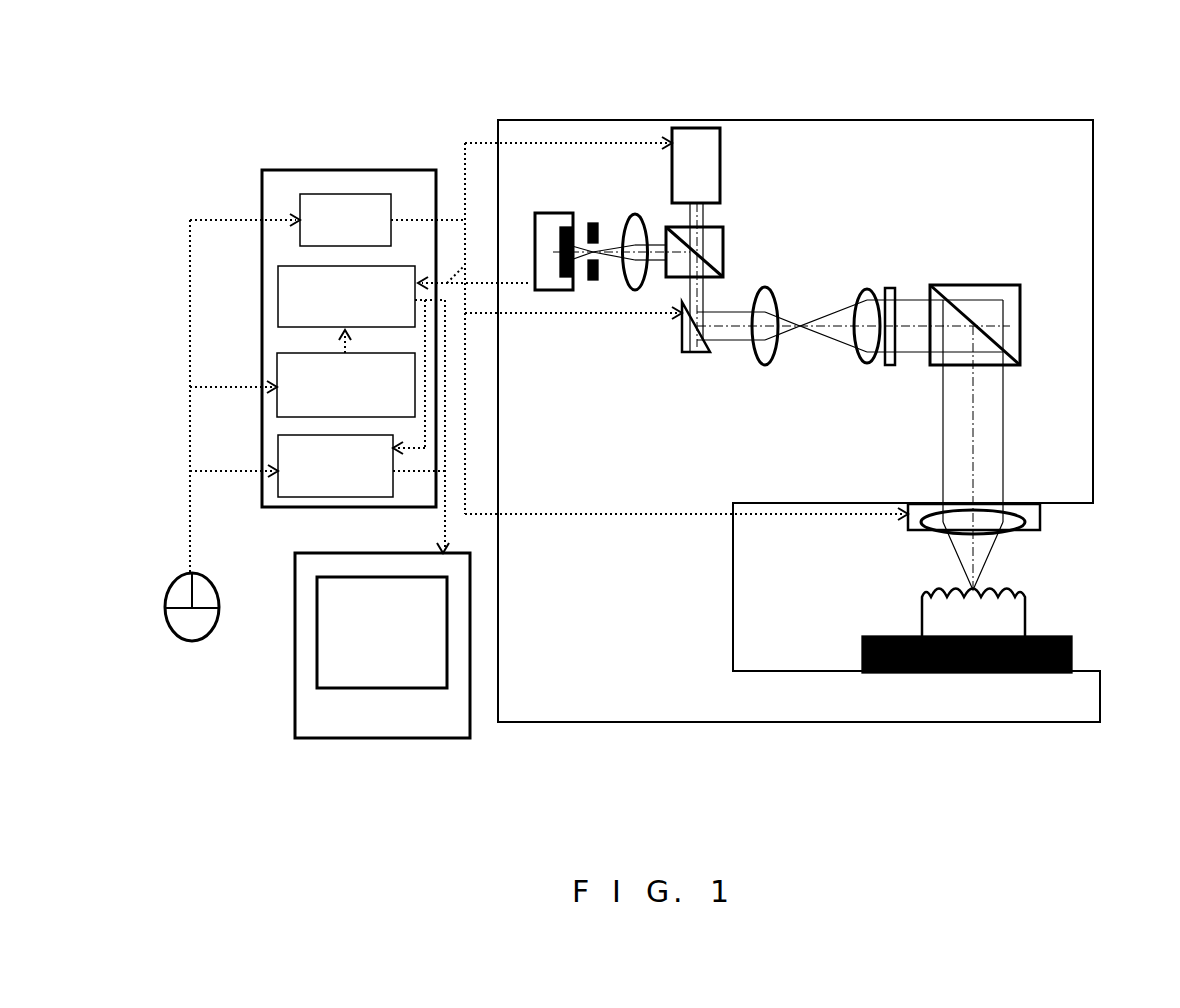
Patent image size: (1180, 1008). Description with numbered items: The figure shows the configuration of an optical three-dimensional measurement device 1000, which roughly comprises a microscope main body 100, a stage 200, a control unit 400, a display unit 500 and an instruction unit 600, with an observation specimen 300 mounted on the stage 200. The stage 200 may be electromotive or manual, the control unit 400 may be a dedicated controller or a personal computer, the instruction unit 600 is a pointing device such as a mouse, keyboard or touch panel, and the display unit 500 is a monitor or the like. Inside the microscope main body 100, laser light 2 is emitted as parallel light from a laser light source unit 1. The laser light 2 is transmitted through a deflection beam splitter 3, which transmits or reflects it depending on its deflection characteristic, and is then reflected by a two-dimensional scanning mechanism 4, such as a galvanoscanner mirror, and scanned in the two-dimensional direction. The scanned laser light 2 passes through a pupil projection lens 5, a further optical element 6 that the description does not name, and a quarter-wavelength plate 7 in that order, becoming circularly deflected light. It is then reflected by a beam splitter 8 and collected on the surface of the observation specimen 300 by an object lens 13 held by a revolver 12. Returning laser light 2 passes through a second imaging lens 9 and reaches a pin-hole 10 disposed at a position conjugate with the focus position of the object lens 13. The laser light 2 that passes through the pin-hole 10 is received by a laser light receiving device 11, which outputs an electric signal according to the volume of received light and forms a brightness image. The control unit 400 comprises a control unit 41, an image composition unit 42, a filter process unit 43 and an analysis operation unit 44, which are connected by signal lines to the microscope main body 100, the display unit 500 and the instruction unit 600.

The optical three-dimensional measurement device 1000 is at (782, 34).
The microscope main body 100 is at (1093, 412).
The laser light source unit 1 is at (720, 168).
The laser light 2 is at (703, 217).
The deflection beam splitter 3 is at (723, 246).
The two-dimensional scanning mechanism 4 is at (682, 340).
The pupil projection lens 5 is at (780, 300).
The lens 6 is at (862, 290).
The ¼-wavelength plate 7 is at (890, 285).
The beam splitter 8 is at (1020, 325).
The second imaging lens 9 is at (636, 214).
The pin-hole 10 is at (594, 222).
The laser light receiving device 11 is at (560, 212).
The revolver 12 is at (1040, 513).
The object lens 13 is at (1040, 530).
The stage 200 is at (866, 640).
The observation specimen 300 is at (921, 615).
The control unit 400 is at (262, 165).
The control unit 41 is at (300, 199).
The image composition unit 42 is at (300, 266).
The filter process unit 43 is at (300, 353).
The analysis operation unit 44 is at (300, 435).
The display unit 500 is at (315, 553).
The instruction unit 600 is at (190, 632).